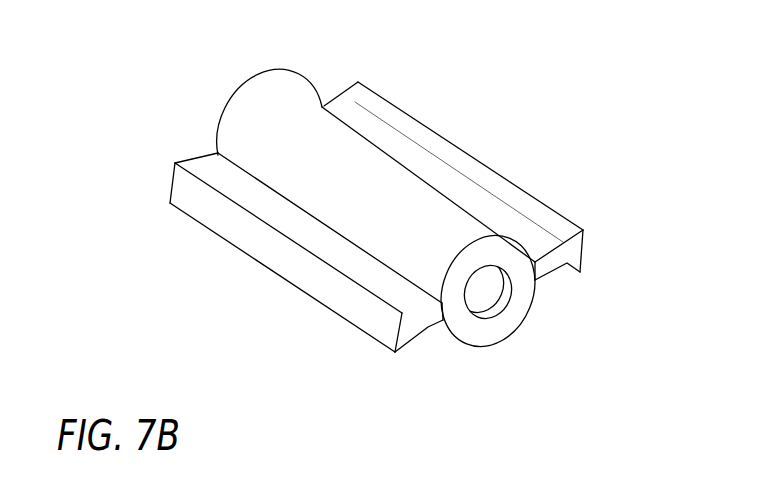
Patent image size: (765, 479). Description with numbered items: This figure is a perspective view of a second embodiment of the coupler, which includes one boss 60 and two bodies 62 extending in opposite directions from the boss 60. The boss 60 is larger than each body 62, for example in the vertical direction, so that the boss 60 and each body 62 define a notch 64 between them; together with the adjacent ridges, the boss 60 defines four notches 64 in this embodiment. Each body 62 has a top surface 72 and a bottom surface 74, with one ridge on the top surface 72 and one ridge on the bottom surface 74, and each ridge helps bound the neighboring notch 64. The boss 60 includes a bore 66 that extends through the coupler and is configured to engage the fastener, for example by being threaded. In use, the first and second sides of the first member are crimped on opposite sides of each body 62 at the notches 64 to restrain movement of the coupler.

The boss 60 is at (247, 98).
The body 62 is at (398, 107).
The notch 64 is at (197, 160).
The bore 66 is at (495, 302).
The top surface 72 is at (445, 167).
The bottom surface 74 is at (538, 277).